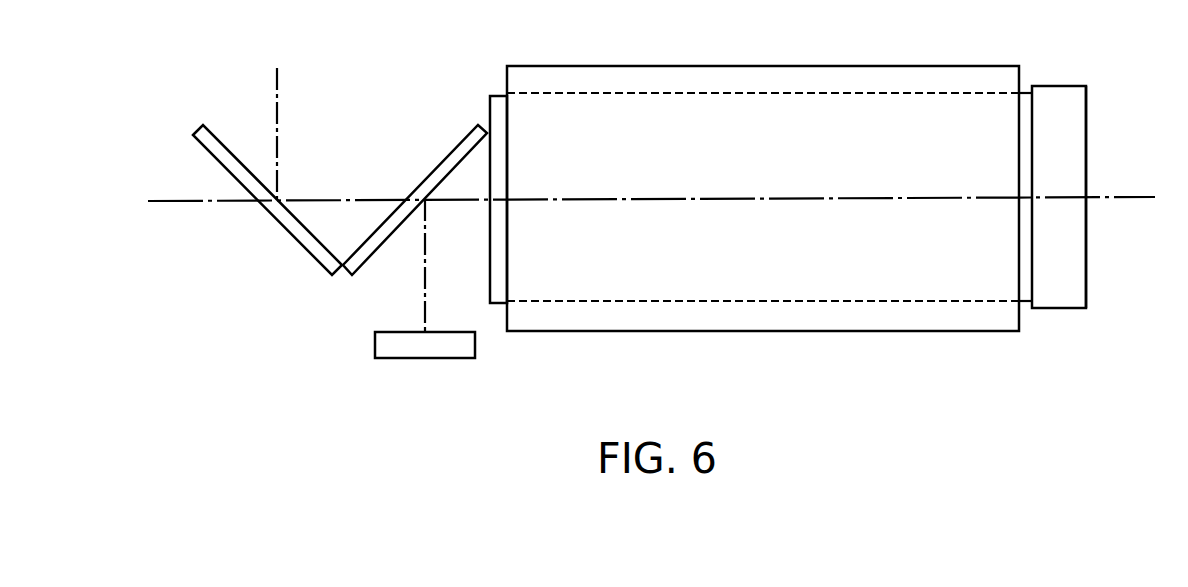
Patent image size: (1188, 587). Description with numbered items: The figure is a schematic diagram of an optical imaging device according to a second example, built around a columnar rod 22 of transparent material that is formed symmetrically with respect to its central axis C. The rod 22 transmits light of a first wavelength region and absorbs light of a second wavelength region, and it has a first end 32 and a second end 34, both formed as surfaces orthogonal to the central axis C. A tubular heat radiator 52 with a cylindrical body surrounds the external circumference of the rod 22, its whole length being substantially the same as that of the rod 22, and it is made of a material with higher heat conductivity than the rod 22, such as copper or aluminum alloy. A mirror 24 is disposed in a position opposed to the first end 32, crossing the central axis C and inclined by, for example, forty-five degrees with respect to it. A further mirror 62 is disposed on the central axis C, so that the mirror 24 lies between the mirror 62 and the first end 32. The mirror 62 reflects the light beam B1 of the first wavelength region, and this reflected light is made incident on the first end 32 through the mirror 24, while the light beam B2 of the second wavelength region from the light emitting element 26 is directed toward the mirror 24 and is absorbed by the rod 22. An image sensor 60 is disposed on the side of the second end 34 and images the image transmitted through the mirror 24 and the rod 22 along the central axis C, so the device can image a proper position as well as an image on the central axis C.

The mirror 62 is at (228, 150).
The mirror 24 is at (452, 150).
The first end 32 is at (489, 252).
The heat radiator 52 is at (716, 66).
The rod 22 is at (923, 93).
The second end 34 is at (1034, 110).
The image sensor 60 is at (1086, 105).
The light emitting element 26 is at (415, 358).
The light beam of the first wavelength region B1 is at (279, 82).
The light beam of the second wavelength region B2 is at (423, 298).
The central axis C is at (1114, 193).